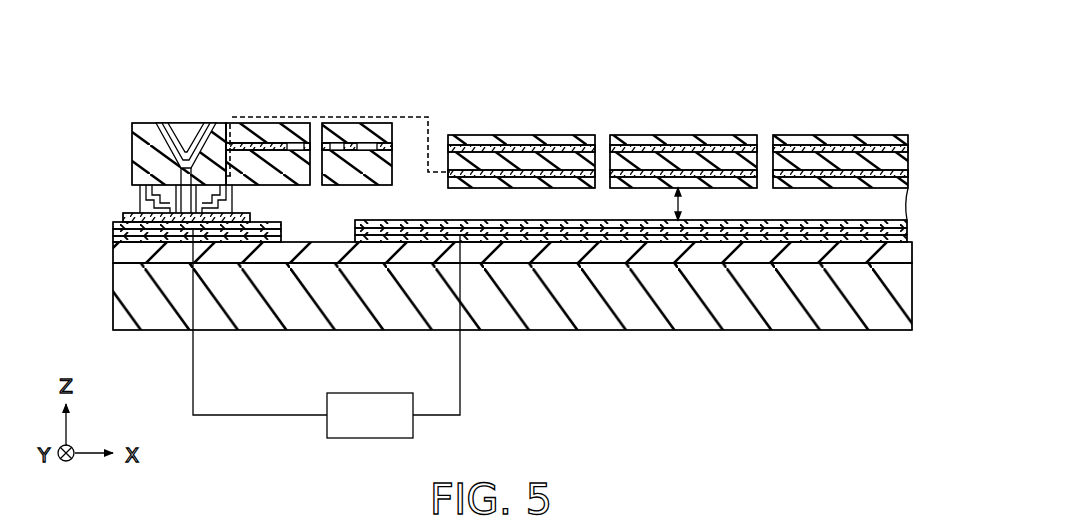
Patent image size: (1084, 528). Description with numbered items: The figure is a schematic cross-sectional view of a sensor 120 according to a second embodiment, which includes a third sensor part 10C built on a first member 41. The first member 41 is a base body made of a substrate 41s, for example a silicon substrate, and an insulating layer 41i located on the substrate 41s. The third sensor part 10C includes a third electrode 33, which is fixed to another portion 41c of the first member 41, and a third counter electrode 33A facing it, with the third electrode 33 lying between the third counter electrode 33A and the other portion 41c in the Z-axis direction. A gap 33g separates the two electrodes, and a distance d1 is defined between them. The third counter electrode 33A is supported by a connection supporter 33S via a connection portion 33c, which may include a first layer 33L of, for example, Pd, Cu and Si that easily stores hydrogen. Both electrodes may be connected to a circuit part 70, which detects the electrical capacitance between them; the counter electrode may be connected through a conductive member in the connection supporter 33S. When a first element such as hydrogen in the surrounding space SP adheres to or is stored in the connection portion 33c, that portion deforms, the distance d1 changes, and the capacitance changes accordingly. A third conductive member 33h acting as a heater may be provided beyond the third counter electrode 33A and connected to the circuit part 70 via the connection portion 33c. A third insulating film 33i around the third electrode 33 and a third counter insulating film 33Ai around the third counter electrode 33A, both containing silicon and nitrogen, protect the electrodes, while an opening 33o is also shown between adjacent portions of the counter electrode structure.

The connection supporter 33S is at (200, 158).
The first layer 33L is at (228, 137).
The connection portion 33c is at (366, 142).
The third conductive member 33h is at (480, 147).
The third counter electrode 33A is at (677, 114).
The third counter insulating film 33Ai is at (657, 180).
The space SP is at (720, 88).
The opening 33o is at (763, 163).
The third sensor part 10C is at (816, 122).
The sensor 120 is at (882, 89).
The distance d1 is at (684, 202).
The gap 33g is at (648, 208).
The third electrode 33 is at (510, 308).
The other portion of the first member 41c is at (713, 253).
The third insulating film 33i is at (770, 229).
The insulating layer 41i is at (257, 253).
The substrate 41s is at (300, 297).
The first member 41 is at (512, 321).
The circuit part 70 is at (327, 428).